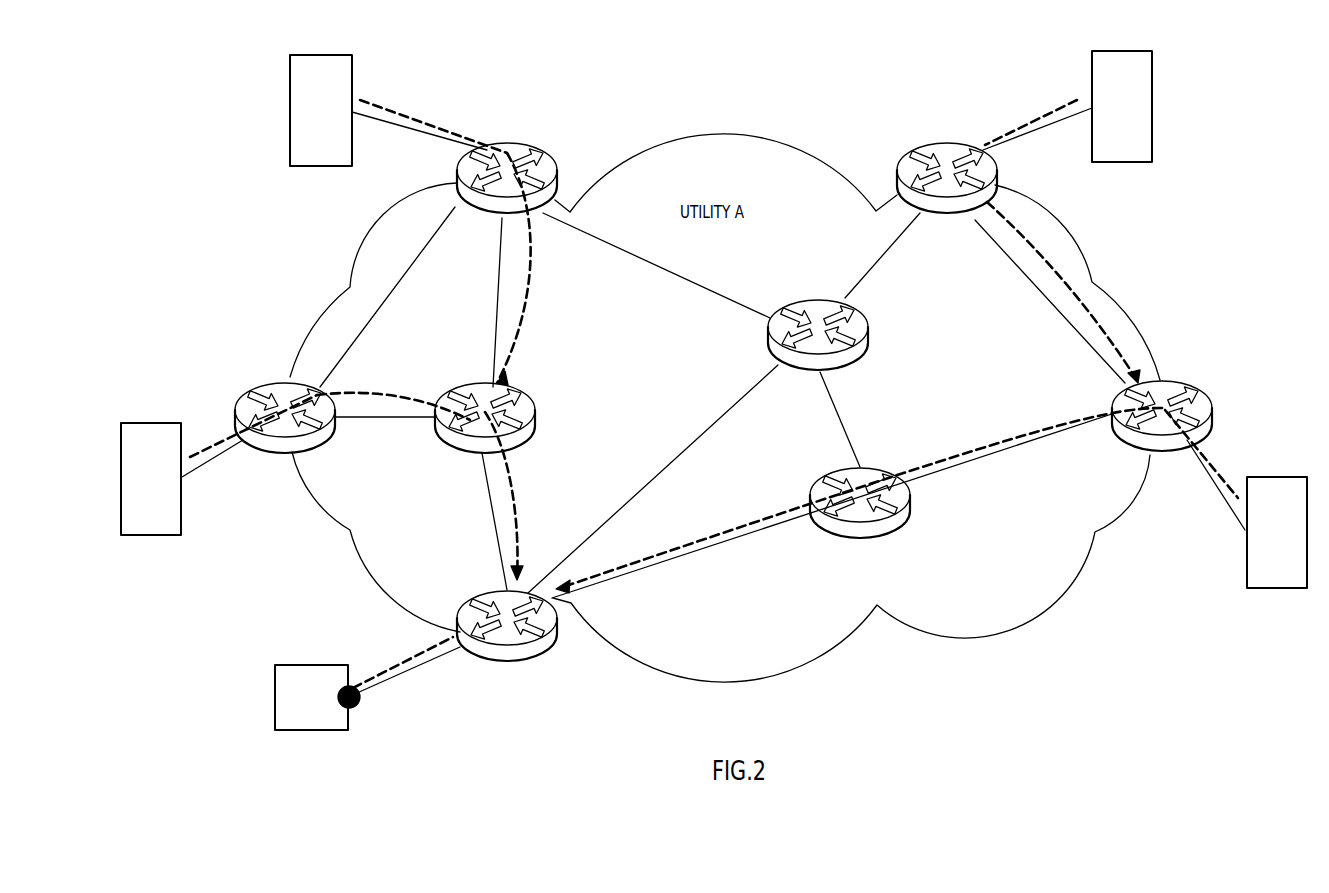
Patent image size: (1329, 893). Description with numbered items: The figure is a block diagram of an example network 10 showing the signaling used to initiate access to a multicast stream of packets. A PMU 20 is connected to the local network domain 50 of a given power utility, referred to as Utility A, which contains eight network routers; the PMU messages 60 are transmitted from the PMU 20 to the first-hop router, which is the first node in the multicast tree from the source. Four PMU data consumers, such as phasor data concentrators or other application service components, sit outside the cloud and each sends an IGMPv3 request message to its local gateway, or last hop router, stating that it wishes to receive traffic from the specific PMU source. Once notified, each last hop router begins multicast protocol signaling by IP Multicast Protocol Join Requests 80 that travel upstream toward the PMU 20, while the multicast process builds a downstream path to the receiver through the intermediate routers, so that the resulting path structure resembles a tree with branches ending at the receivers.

The network 10 is at (944, 56).
The PMU 20 is at (275, 703).
The network domain 50 is at (313, 497).
The PMU messages 60 is at (412, 657).
The IP Multicast Protocol Join Requests 80 is at (525, 297).